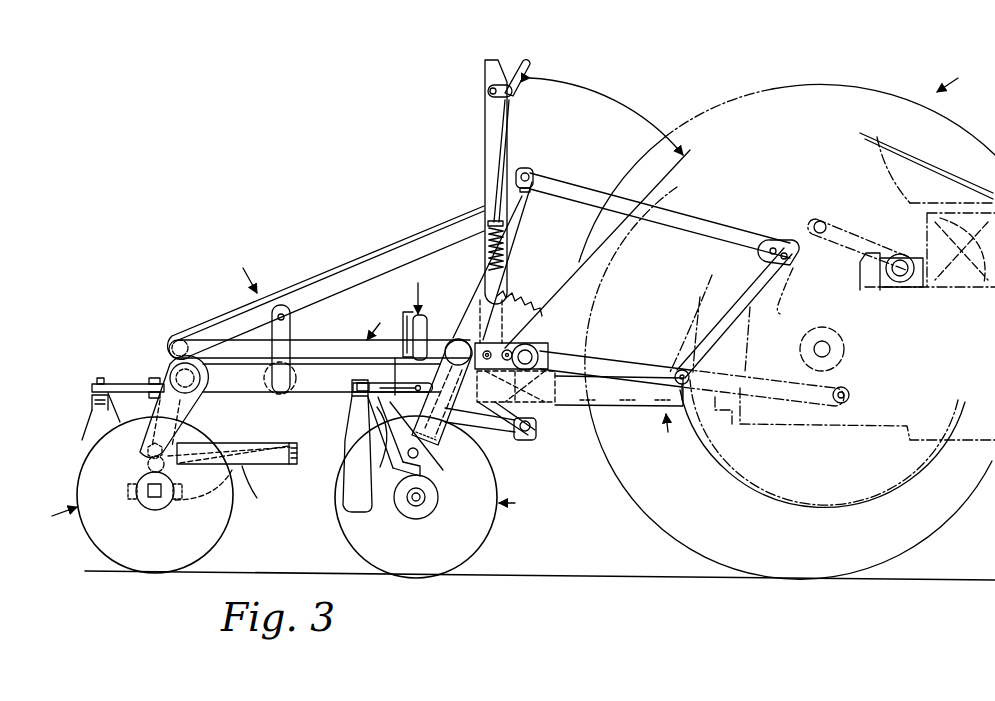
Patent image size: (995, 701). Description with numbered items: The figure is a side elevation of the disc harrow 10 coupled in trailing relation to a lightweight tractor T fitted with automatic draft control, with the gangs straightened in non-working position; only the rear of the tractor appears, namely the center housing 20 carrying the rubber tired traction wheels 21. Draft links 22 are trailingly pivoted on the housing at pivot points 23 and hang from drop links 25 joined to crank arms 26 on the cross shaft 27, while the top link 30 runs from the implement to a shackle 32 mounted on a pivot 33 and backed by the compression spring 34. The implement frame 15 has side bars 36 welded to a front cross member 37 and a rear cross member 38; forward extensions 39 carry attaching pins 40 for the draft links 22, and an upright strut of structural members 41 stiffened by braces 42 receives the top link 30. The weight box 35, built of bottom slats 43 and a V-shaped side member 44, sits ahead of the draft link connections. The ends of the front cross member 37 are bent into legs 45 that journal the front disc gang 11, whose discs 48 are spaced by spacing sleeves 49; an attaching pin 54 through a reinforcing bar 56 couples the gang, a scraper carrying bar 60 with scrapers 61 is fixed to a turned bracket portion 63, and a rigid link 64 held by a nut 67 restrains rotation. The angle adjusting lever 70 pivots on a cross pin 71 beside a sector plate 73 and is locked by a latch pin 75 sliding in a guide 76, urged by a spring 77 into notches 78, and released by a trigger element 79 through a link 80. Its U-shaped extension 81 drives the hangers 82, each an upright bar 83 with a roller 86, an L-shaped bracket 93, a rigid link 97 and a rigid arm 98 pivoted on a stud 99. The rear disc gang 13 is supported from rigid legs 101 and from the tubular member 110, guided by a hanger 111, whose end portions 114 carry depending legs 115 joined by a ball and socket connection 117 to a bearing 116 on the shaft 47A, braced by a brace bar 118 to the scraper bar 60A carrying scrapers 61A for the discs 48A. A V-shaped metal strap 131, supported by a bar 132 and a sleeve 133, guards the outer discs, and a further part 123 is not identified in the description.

The tractor T is at (956, 77).
The disc harrow 10 is at (236, 269).
The front disc gang 11 is at (437, 497).
The rear disc gang 13 is at (128, 495).
The implement frame 15 is at (380, 322).
The center housing 20 is at (843, 420).
The traction wheels 21 is at (656, 518).
The draft links 22 is at (597, 351).
The pivot points 23 is at (850, 386).
The drop links 25 is at (745, 317).
The crank arms 26 is at (853, 230).
The cross shaft 27 is at (903, 279).
The top link 30 is at (680, 210).
The shackle 32 is at (778, 242).
The shackle pivot 33 is at (791, 299).
The compression spring 34 is at (863, 281).
The weight box 35 is at (666, 433).
The side bars 36 is at (310, 346).
The front cross member 37 is at (452, 336).
The rear cross member 38 is at (182, 340).
The forward extensions 39 is at (518, 348).
The attaching pins 40 is at (539, 356).
The structural members 41 is at (504, 232).
The braces 42 is at (347, 260).
The bottom slats 43 is at (550, 406).
The V-shaped side member 44 is at (640, 410).
The legs 45 is at (432, 441).
The shaft 47A is at (152, 511).
The discs 48 is at (470, 550).
The discs 48A is at (212, 545).
The spacing sleeves 49 is at (428, 505).
The attaching pin 54 is at (430, 466).
The reinforcing bar 56 is at (360, 415).
The scraper carrying bar 60 is at (358, 398).
The scraper bar 60A is at (92, 398).
The scrapers 61 is at (346, 448).
The scrapers 61A is at (88, 446).
The turned portion 63 is at (352, 390).
The rigid link 64 is at (387, 368).
The nut 67 is at (353, 377).
The lever 70 is at (485, 124).
The cross pin 71 is at (484, 343).
The sector plate 73 is at (535, 325).
The latch pin 75 is at (505, 275).
The guide 76 is at (528, 194).
The spring 77 is at (507, 248).
The notches 78 is at (517, 300).
The trigger element 79 is at (521, 62).
The link 80 is at (509, 140).
The U-shaped extension 81 is at (540, 402).
The hangers 82 is at (417, 312).
The upright bar 83 is at (405, 384).
The roller 86 is at (400, 340).
The L-shaped bracket 93 is at (372, 504).
The rigid link 97 is at (352, 412).
The rigid arm 98 is at (505, 442).
The stud 99 is at (536, 436).
The rigid legs 101 is at (172, 368).
The tubular member 110 is at (298, 378).
The hanger 111 is at (288, 331).
The end portions 114 is at (232, 388).
The depending leg 115 is at (195, 398).
The bearing 116 is at (147, 468).
The ball and socket connection 117 is at (148, 452).
The brace bar 118 is at (128, 386).
The bolt 123 is at (300, 393).
The V-shaped metal strap 131 is at (283, 465).
The bar 132 is at (266, 491).
The sleeve 133 is at (172, 508).